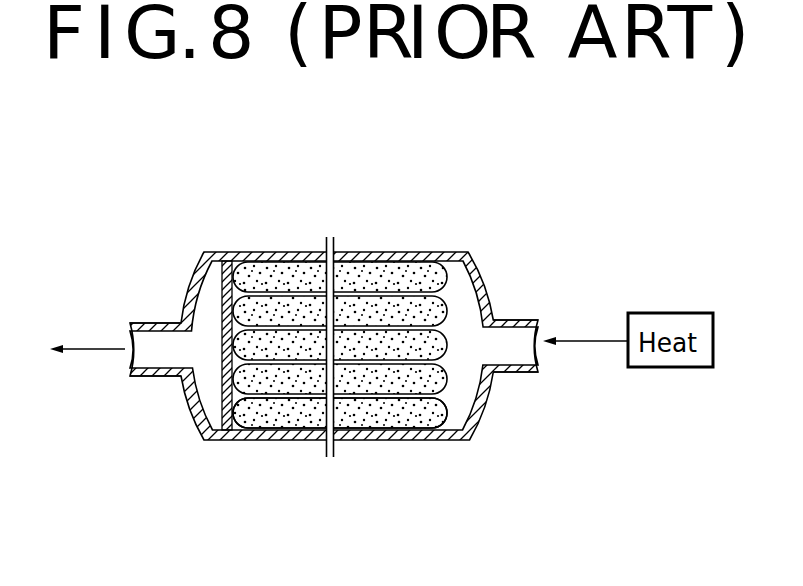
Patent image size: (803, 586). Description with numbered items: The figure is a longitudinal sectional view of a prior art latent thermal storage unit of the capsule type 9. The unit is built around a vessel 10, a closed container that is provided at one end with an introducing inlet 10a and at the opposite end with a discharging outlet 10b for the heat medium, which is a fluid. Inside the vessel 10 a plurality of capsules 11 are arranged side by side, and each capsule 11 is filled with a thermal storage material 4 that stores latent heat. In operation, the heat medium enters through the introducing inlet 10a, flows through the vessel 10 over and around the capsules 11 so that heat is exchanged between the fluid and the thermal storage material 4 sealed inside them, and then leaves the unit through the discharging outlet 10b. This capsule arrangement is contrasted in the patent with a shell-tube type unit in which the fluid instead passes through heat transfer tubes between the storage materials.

The capsule type thermal storage unit 9 is at (334, 302).
The vessel 10 is at (265, 252).
The introducing inlet 10a is at (517, 342).
The discharging outlet 10b is at (153, 348).
The capsule 11 is at (447, 412).
The thermal storage material 4 is at (407, 412).